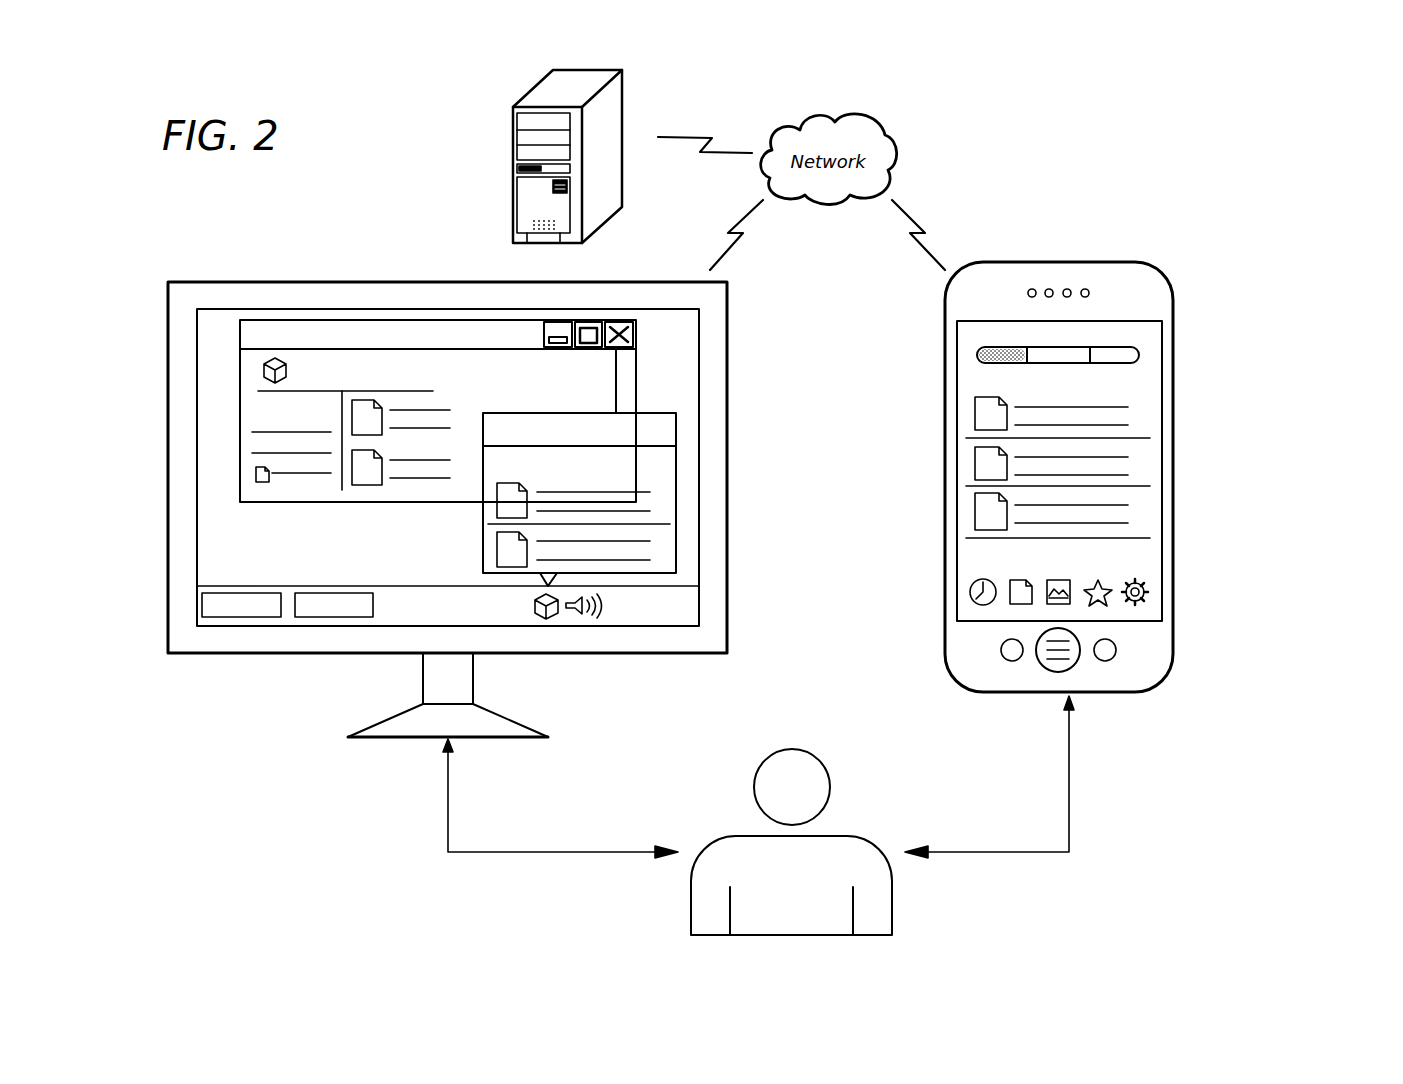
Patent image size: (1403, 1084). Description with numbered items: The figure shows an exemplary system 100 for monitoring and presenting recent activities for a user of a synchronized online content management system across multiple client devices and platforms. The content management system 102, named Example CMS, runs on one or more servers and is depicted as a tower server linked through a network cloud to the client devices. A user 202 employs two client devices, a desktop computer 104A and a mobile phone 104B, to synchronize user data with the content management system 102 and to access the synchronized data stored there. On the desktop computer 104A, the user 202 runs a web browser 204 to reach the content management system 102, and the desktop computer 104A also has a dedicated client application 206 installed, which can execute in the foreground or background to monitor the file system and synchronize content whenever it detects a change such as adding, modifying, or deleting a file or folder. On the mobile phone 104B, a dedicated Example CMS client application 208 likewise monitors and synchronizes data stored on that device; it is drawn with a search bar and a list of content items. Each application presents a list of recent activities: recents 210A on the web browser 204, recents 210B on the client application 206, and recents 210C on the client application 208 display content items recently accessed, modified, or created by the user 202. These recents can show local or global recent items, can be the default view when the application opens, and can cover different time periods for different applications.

The system 100 is at (1295, 210).
The content management system 102 is at (513, 150).
The desktop computer 104A is at (305, 282).
The mobile phone 104B is at (1118, 262).
The user 202 is at (892, 920).
The web browser 204 is at (240, 332).
The client application 206 is at (657, 416).
The client application 208 is at (1140, 354).
The recents 210A is at (250, 405).
The recents 210B is at (568, 465).
The recents 210C is at (1055, 378).